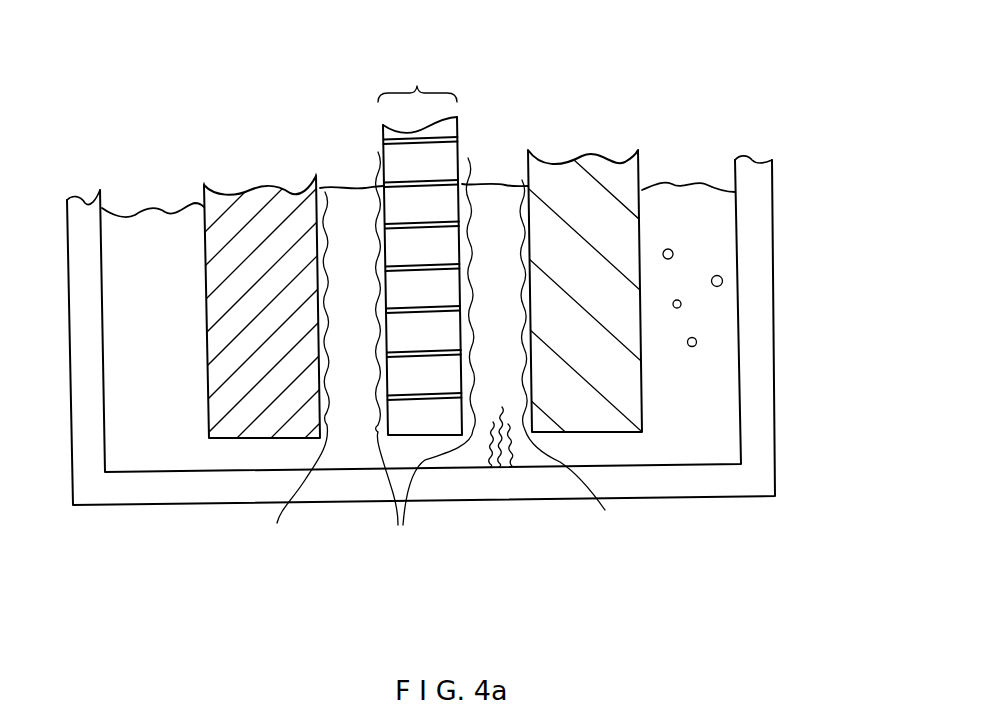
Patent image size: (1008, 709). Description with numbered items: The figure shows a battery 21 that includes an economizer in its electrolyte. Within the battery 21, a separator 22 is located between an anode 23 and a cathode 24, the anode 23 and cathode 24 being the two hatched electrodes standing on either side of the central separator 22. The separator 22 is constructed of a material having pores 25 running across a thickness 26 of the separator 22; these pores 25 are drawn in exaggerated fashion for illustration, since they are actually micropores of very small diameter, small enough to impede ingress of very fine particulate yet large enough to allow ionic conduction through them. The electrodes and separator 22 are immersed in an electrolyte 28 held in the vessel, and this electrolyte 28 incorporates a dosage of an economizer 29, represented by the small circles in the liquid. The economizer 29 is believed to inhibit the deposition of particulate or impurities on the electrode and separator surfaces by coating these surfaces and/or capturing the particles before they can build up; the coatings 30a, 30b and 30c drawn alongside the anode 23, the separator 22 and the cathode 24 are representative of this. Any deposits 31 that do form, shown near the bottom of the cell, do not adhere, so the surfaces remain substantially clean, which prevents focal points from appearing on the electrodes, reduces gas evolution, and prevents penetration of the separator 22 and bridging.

The battery 21 is at (796, 287).
The separator 22 is at (426, 235).
The anode 23 is at (214, 167).
The cathode 24 is at (644, 147).
The pores 25 is at (407, 177).
The thickness 26 is at (417, 78).
The electrolyte 28 is at (715, 402).
The economizer 29 is at (723, 276).
The coating 30a is at (290, 377).
The coating 30b is at (426, 357).
The coating 30c is at (576, 366).
The deposits 31 is at (487, 447).